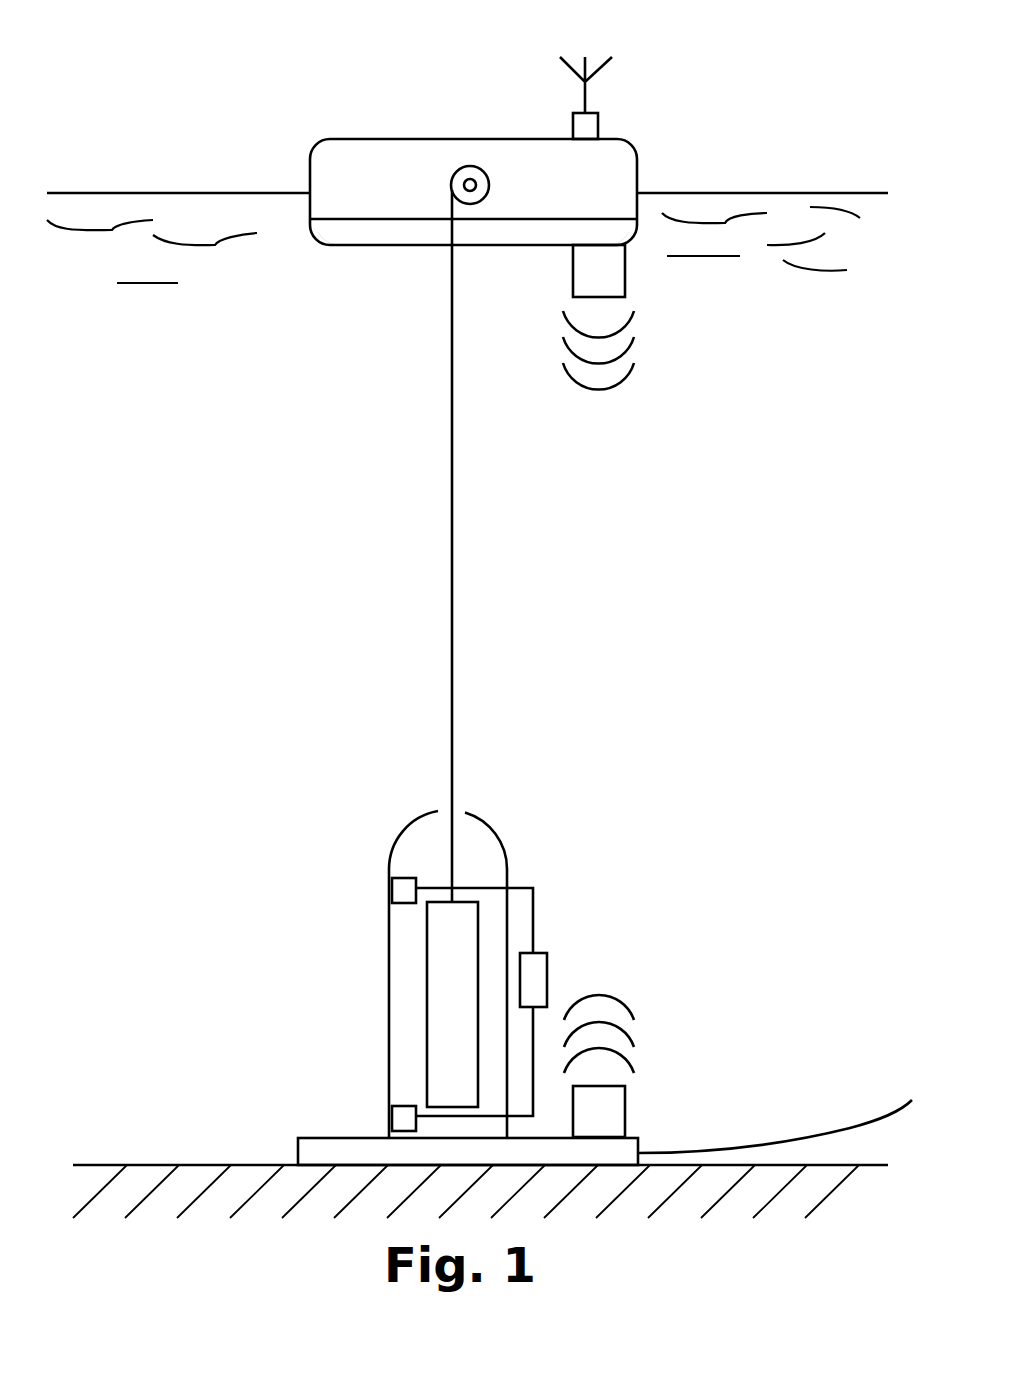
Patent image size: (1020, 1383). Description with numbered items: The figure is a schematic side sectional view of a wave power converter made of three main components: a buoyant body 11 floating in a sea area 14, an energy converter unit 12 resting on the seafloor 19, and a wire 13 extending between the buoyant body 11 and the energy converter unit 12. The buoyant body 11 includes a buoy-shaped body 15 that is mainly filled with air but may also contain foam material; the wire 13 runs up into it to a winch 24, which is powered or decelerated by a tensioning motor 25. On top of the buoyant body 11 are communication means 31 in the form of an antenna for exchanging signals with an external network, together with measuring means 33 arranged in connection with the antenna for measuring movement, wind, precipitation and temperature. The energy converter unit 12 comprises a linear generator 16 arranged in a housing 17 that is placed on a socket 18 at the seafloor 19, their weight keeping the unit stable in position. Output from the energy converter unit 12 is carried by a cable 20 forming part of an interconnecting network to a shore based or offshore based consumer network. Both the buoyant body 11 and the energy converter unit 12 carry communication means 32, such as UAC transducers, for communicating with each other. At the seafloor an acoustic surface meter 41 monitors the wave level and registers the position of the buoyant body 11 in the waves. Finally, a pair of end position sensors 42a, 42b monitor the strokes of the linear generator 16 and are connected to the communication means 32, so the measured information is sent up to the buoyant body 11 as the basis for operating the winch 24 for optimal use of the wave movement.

The buoyant body 11 is at (451, 173).
The energy converter unit 12 is at (415, 988).
The wire 13 is at (452, 507).
The sea area 14 is at (155, 193).
The buoy-shaped body 15 is at (416, 139).
The linear generator 16 is at (457, 938).
The housing 17 is at (387, 982).
The socket 18 is at (298, 1138).
The seafloor 19 is at (127, 1165).
The cable 20 is at (802, 1140).
The winch 24 is at (457, 185).
The tensioning motor 25 is at (337, 245).
The communication means 31 is at (597, 62).
The communication means 32 is at (627, 270).
The measuring means 33 is at (592, 125).
The surface meter 41 is at (627, 1110).
The end position sensor 42a is at (403, 890).
The end position sensor 42b is at (388, 1118).